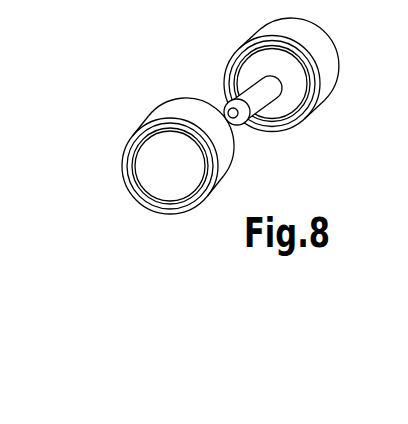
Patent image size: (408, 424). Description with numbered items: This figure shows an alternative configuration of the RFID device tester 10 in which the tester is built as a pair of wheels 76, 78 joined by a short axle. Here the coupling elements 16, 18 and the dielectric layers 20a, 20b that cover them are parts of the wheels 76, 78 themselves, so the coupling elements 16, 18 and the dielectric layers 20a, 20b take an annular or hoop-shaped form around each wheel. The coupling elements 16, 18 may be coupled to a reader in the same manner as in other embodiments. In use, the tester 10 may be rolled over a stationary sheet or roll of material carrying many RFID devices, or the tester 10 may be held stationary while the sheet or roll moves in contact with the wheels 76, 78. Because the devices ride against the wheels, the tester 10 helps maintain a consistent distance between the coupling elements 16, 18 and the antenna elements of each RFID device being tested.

The RFID device tester 10 is at (108, 98).
The coupling element 16 is at (179, 210).
The coupling element 18 is at (284, 121).
The dielectric layer 20a is at (150, 202).
The dielectric layer 20b is at (272, 131).
The wheel 76 is at (108, 153).
The wheel 78 is at (222, 34).